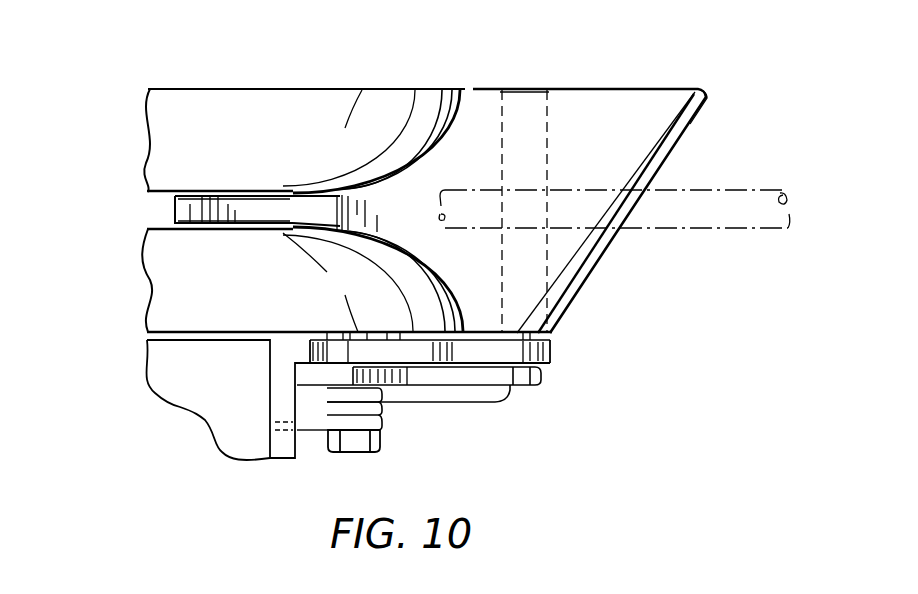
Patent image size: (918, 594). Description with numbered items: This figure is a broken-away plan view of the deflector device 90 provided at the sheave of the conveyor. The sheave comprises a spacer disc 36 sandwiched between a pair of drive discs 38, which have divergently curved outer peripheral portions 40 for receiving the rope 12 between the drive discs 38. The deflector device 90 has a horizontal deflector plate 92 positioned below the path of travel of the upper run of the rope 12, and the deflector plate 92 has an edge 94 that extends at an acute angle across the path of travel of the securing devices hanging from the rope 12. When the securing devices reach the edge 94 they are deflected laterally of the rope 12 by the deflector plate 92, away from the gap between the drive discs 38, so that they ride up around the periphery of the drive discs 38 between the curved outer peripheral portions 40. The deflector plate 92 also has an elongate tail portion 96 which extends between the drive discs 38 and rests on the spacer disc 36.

The rope 12 is at (734, 205).
The spacer disc 36 is at (160, 209).
The drive discs 38 is at (252, 146).
The divergently curved outer peripheral portions 40 is at (312, 108).
The deflector device 90 is at (546, 72).
The deflector plate 92 is at (628, 140).
The edge 94 is at (690, 137).
The elongate tail portion 96 is at (192, 210).